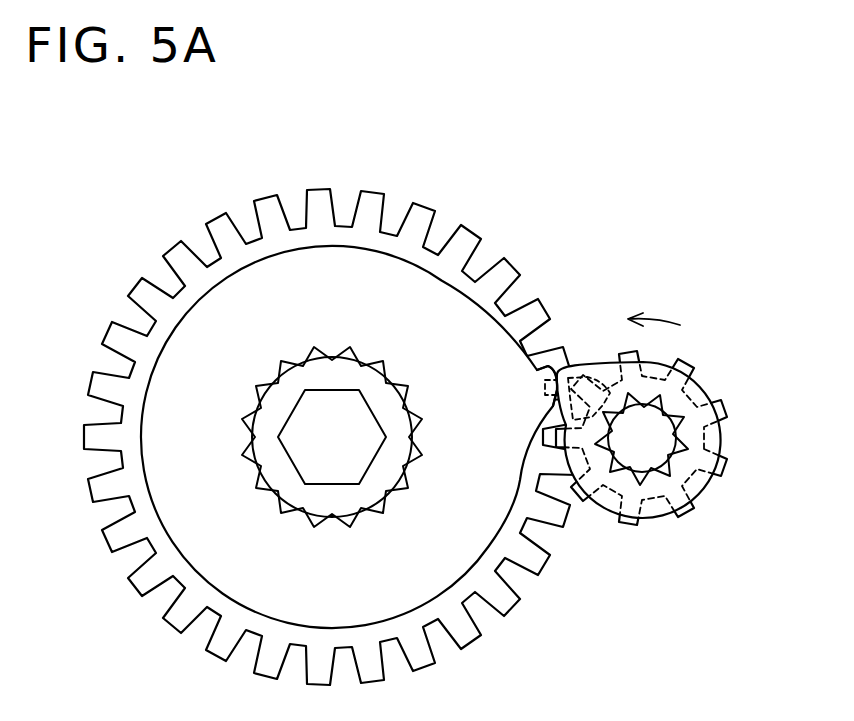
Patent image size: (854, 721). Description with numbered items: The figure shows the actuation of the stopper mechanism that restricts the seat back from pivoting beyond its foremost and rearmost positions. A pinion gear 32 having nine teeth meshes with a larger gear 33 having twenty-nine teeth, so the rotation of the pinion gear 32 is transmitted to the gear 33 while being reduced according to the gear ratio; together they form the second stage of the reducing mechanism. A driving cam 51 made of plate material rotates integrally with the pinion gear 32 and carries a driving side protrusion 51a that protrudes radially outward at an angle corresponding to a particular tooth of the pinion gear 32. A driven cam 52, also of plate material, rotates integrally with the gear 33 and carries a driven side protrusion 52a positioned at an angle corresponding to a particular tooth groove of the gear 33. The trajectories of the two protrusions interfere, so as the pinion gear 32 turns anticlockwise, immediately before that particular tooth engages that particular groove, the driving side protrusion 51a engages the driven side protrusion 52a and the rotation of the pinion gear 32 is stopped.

The gear 33 is at (182, 290).
The driven cam 52 is at (187, 348).
The driven side protrusion 52a is at (540, 365).
The driving cam 51 is at (697, 495).
The driving side protrusion 51a is at (577, 367).
The pinion gear 32 is at (687, 366).